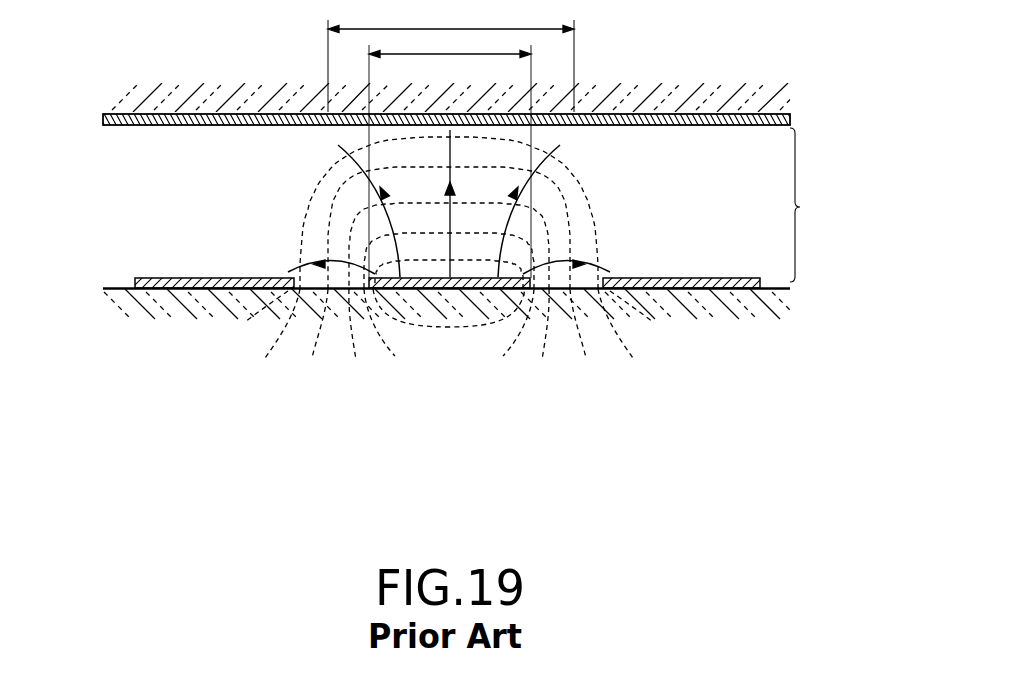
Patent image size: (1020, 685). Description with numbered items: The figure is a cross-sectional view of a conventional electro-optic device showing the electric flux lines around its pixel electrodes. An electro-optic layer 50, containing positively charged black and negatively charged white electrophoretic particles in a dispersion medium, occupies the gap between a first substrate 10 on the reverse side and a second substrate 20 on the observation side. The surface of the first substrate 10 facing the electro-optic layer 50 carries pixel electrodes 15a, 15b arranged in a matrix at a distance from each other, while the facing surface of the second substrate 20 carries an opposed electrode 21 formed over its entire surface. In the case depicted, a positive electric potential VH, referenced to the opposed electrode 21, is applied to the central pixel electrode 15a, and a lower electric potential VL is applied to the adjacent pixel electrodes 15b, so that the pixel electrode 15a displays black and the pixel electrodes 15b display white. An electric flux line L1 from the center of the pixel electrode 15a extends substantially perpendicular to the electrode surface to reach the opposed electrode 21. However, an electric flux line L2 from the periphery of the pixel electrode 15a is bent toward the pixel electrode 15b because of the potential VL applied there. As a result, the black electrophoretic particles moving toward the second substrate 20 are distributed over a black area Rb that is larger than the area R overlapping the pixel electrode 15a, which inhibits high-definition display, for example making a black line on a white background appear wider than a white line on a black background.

The first substrate 10 is at (785, 302).
The pixel electrode 15a is at (480, 289).
The pixel electrode 15b is at (210, 278).
The second substrate 20 is at (792, 93).
The opposed electrode 21 is at (792, 118).
The electro-optic layer 50 is at (815, 205).
The electric flux line L1 is at (452, 143).
The electric flux line L2 is at (340, 262).
The electric potential VH is at (447, 303).
The electric potential VL is at (455, 305).
The area R is at (450, 154).
The black area Rb is at (451, 58).